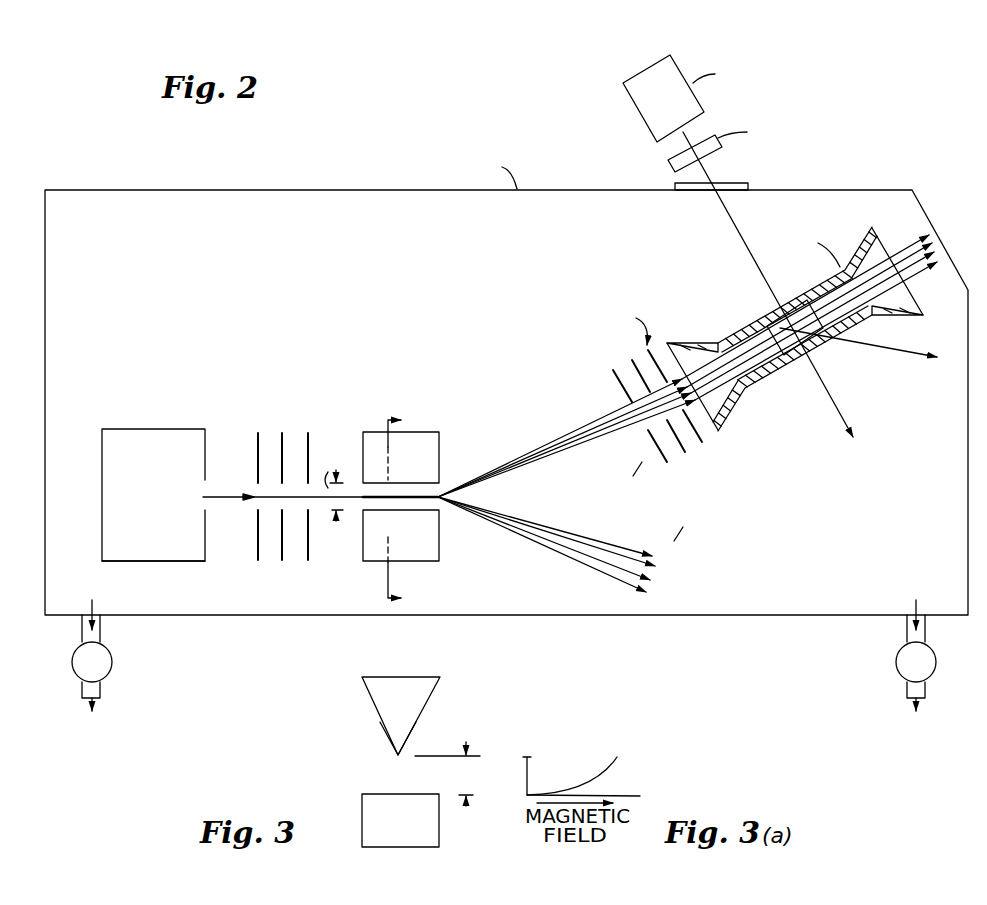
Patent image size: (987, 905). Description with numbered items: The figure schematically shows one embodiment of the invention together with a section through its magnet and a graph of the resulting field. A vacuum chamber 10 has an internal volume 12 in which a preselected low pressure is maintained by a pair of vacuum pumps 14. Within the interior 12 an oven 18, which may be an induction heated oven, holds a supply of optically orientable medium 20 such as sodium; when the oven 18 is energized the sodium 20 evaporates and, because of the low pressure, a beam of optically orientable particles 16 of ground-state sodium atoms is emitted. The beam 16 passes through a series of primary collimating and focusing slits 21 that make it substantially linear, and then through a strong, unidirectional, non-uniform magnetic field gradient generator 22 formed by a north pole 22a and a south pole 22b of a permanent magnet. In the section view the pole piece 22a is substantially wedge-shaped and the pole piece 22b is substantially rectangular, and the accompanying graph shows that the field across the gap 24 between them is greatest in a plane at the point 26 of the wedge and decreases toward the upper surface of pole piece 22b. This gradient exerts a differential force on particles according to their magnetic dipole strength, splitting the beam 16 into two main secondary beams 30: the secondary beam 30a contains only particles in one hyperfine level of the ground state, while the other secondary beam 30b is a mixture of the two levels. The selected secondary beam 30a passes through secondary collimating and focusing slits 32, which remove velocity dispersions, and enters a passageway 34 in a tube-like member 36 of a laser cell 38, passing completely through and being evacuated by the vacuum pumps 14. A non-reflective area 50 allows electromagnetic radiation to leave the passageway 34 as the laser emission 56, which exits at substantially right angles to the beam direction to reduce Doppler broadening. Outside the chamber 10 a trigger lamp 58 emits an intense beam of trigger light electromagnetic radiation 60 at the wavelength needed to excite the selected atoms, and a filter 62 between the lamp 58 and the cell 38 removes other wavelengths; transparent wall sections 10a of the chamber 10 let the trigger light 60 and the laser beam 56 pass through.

In FIG. 2, the vacuum chamber 10 is at (559, 189).
In FIG. 2, the transparent wall sections 10a is at (749, 189).
In FIG. 2, the internal volume 12 is at (433, 231).
In FIG. 2, the vacuum pumps 14 is at (112, 654).
In FIG. 2, the beam of optically orientable particles 16 is at (237, 484).
In FIG. 2, the oven 18 is at (142, 562).
In FIG. 2, the optically orientable medium 20 is at (168, 515).
In FIG. 2, the primary collimating and focusing slits 21 is at (308, 433).
In FIG. 2, the magnetic field gradient generator 22 is at (432, 475).
In FIG. 3, the magnetic field gradient generator 22 is at (424, 750).
In FIG. 2, the north pole 22a is at (407, 432).
In FIG. 3, the north pole 22a is at (425, 676).
In FIG. 2, the south pole 22b is at (398, 562).
In FIG. 3, the south pole 22b is at (439, 843).
In FIG. 2, the gap 24 is at (337, 484).
In FIG. 3, the gap 24 is at (450, 774).
In FIG. 3, the point of the wedge-shaped pole piece 26 is at (393, 756).
In FIG. 2, the main secondary beams 30 is at (687, 413).
In FIG. 2, the secondary beam 30a is at (535, 448).
In FIG. 2, the other secondary beam 30b is at (552, 547).
In FIG. 2, the secondary collimating and focusing slits 32 is at (631, 358).
In FIG. 2, the passageway 34 is at (730, 410).
In FIG. 2, the tube-like member 36 is at (767, 376).
In FIG. 2, the laser cell 38 is at (795, 327).
In FIG. 2, the non-reflective area 50 is at (768, 322).
In FIG. 2, the laser emission 56 is at (900, 350).
In FIG. 2, the trigger lamp 58 is at (705, 111).
In FIG. 2, the trigger light electromagnetic radiation 60 is at (710, 175).
In FIG. 2, the filter 62 is at (668, 165).